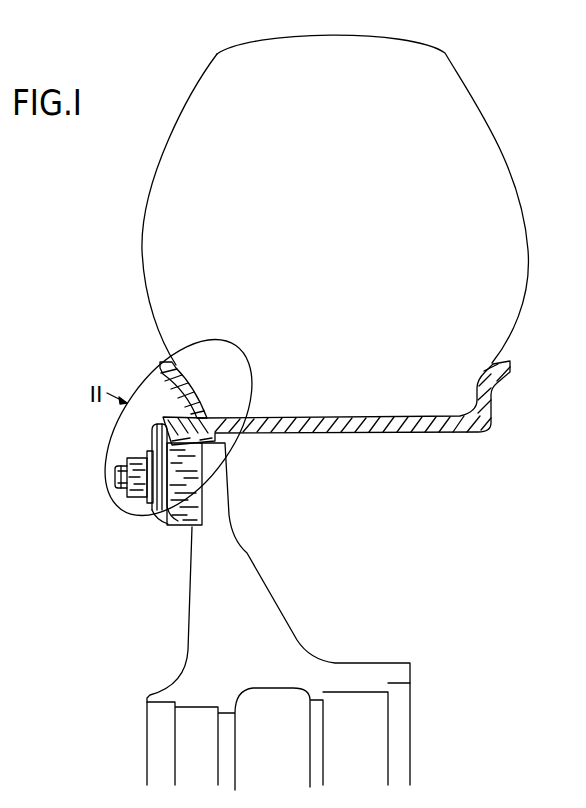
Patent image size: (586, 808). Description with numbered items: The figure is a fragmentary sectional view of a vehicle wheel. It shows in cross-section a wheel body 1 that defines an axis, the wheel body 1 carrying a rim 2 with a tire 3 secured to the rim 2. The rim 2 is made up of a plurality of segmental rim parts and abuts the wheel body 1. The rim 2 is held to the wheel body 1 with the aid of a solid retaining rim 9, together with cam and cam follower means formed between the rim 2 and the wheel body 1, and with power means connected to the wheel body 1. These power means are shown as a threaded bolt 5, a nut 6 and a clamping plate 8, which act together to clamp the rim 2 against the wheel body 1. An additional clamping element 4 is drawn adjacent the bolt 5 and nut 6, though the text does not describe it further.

The wheel body 1 is at (268, 622).
The rim 2 is at (325, 424).
The tire 3 is at (503, 193).
The clamping plate 4 is at (155, 513).
The threaded bolt 5 is at (118, 478).
The nut 6 is at (140, 476).
The clamping plate 8 is at (176, 527).
The solid retaining rim 9 is at (176, 432).